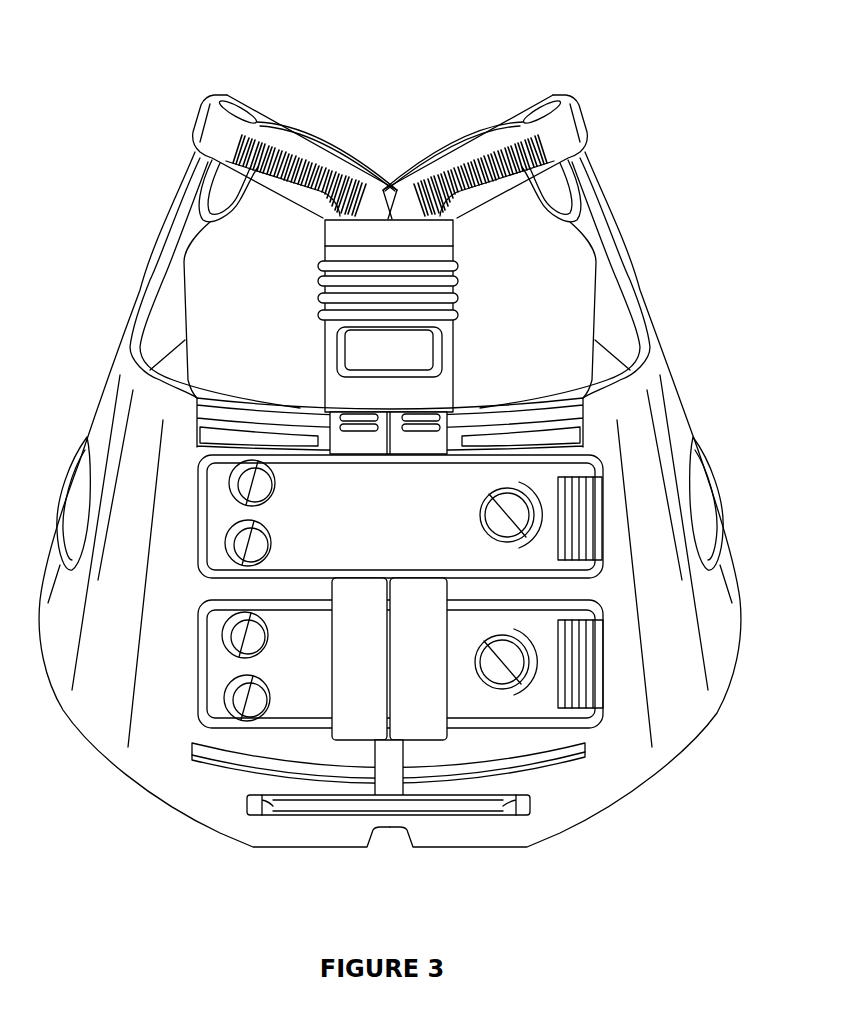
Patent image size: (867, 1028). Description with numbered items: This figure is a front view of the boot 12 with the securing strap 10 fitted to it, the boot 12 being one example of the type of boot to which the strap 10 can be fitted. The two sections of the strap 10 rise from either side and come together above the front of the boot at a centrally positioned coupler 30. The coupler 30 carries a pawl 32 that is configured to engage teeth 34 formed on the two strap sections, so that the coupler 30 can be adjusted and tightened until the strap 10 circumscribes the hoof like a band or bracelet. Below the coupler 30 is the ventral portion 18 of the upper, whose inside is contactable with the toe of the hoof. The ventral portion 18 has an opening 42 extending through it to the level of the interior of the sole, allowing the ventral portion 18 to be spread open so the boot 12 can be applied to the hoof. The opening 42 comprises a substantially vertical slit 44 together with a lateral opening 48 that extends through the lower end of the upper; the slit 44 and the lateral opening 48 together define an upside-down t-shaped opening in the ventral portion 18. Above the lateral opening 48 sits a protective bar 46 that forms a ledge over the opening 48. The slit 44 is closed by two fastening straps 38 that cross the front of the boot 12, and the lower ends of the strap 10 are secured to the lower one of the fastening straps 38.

The boot 12 is at (112, 76).
The ventral portion 18 is at (625, 730).
The strap 10 is at (568, 133).
The teeth 34 is at (483, 160).
The coupler 30 is at (453, 245).
The pawl 32 is at (403, 343).
The fastening strap 38 is at (542, 483).
The slit 44 is at (393, 747).
The protective bar 46 is at (528, 765).
The opening 42 is at (387, 772).
The lateral opening 48 is at (307, 803).